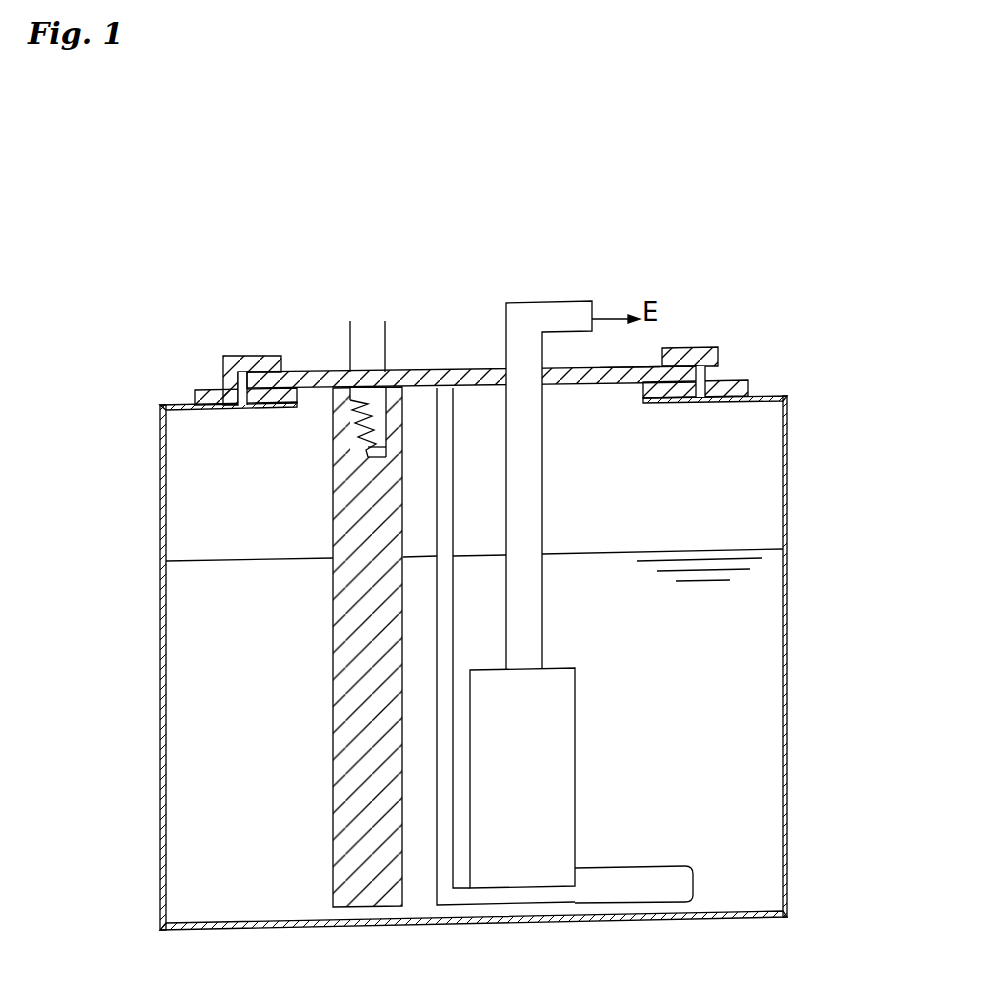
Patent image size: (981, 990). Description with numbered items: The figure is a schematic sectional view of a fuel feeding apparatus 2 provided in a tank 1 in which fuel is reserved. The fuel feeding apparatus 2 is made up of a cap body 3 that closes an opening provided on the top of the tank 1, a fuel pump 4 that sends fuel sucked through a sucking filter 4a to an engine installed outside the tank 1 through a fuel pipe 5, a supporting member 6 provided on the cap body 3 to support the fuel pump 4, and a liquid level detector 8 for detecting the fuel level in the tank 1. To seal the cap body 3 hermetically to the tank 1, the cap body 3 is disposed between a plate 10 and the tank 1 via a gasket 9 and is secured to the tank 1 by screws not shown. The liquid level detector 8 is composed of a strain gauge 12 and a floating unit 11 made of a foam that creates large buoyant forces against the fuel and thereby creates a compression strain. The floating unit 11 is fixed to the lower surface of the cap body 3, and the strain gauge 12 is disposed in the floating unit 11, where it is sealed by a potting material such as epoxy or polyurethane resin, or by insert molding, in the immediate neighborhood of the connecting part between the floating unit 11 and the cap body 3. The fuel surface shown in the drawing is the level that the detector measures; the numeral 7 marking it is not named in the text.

The tank 1 is at (789, 419).
The fuel feeding apparatus 2 is at (468, 368).
The cap body 3 is at (633, 365).
The fuel pump 4 is at (575, 748).
The sucking filter 4a is at (653, 869).
The fuel pipe 5 is at (542, 489).
The supporting member 6 is at (453, 627).
The liquid level 7 is at (736, 552).
The liquid level detector 8 is at (318, 626).
The gasket 9 is at (690, 350).
The plate 10 is at (741, 383).
The floating unit 11 is at (333, 519).
The strain gauge 12 is at (372, 398).